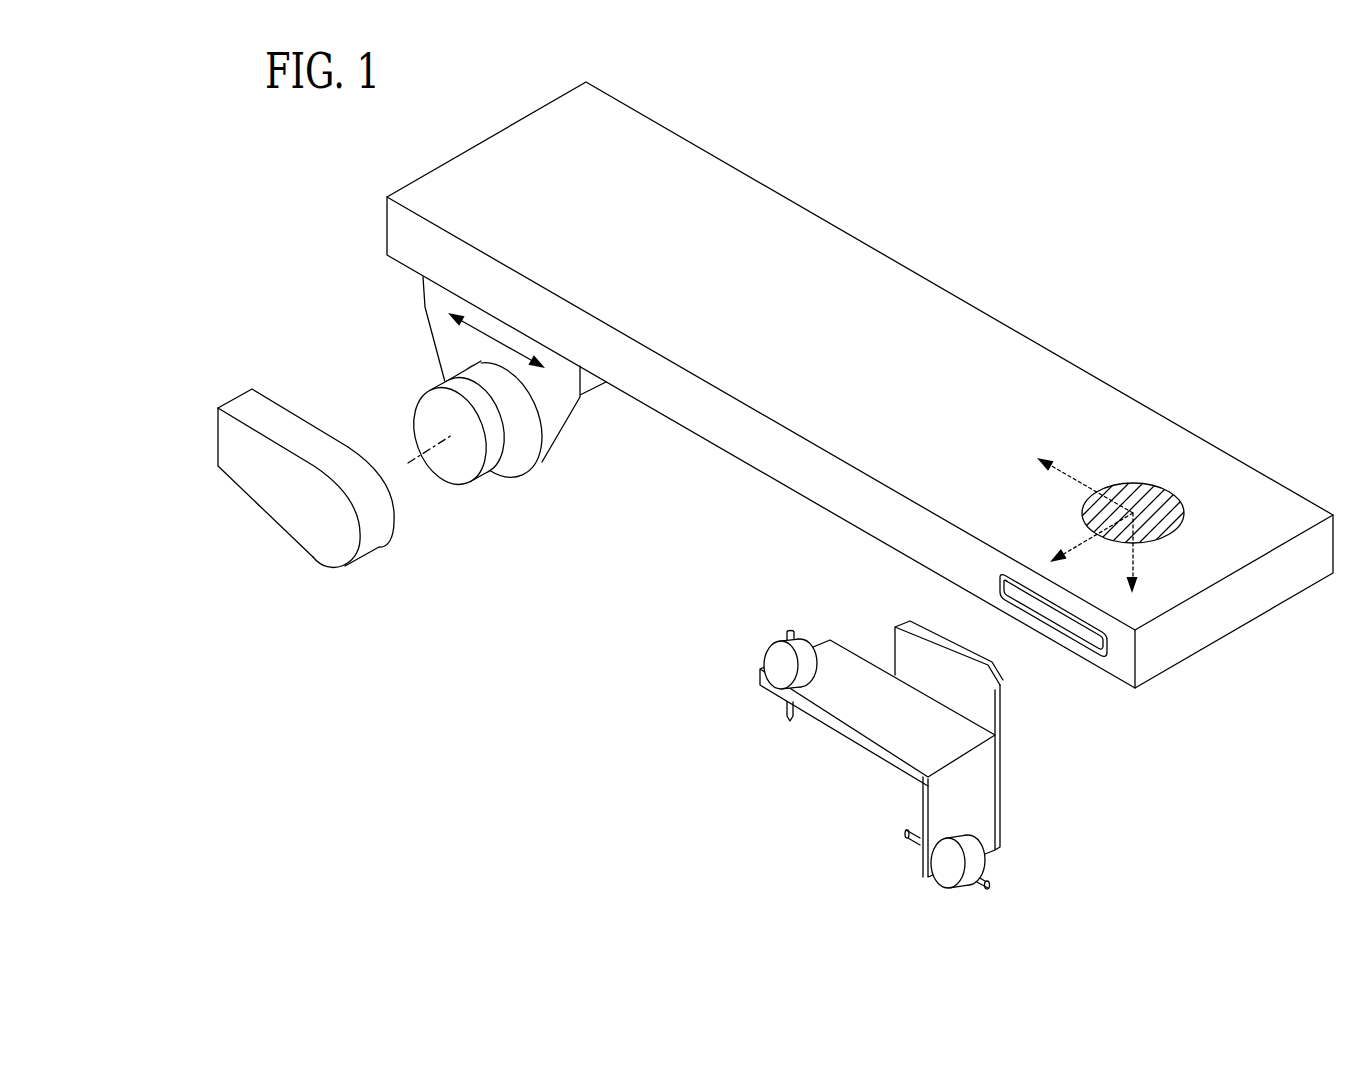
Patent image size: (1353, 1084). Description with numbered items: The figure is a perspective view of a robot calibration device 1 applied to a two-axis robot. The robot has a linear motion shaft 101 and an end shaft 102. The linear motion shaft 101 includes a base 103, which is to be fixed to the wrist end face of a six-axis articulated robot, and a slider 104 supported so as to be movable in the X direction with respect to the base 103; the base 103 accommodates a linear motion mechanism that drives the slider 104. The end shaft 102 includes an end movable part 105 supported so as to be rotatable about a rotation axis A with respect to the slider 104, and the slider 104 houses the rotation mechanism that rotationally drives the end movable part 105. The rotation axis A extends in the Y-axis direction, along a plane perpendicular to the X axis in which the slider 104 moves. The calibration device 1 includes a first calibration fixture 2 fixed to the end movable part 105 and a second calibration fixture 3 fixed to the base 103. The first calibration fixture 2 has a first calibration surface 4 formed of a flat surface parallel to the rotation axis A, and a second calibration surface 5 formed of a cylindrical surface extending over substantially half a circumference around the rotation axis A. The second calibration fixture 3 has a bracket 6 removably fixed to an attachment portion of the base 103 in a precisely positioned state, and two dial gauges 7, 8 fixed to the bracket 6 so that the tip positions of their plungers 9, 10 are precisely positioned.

The calibration device 1 is at (515, 738).
The first calibration fixture 2 is at (186, 387).
The second calibration fixture 3 is at (815, 755).
The first calibration surface 4 is at (250, 406).
The second calibration surface 5 is at (373, 542).
The bracket 6 is at (884, 758).
The dial gauge 7 is at (771, 656).
The dial gauge 8 is at (957, 882).
The plunger 9 is at (785, 710).
The plunger 10 is at (905, 843).
The linear motion shaft 101 is at (950, 275).
The end shaft 102 is at (497, 490).
The base 103 is at (797, 262).
The slider 104 is at (593, 428).
The end movable part 105 is at (448, 387).
The rotation axis A is at (420, 467).